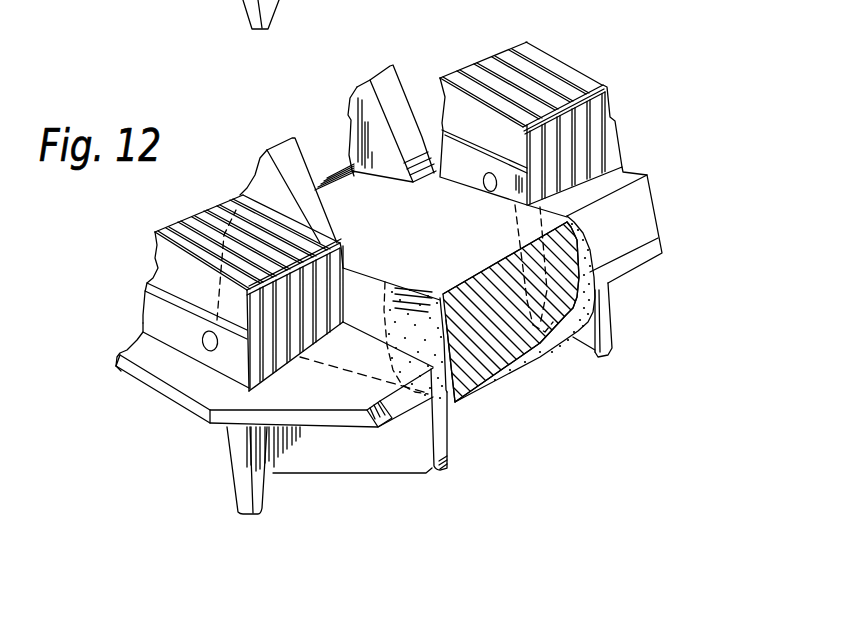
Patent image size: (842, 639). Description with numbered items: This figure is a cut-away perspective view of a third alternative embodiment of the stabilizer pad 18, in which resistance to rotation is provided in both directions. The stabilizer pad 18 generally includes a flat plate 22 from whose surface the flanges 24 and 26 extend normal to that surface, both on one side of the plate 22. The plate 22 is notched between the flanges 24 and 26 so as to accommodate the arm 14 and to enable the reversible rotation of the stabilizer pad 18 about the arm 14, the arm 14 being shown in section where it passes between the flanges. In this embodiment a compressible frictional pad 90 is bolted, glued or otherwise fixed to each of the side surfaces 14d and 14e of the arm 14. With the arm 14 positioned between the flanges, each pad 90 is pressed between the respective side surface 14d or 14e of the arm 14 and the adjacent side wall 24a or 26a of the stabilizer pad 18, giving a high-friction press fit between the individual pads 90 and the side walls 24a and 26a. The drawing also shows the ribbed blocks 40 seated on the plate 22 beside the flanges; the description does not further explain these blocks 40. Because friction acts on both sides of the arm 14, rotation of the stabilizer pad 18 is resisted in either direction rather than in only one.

The arm 14 is at (520, 360).
The side surface of the arm 14d is at (445, 407).
The side surface of the arm 14e is at (583, 300).
The stabilizer pad 18 is at (164, 406).
The flat plate 22 is at (163, 371).
The flange 24 is at (398, 0).
The side wall of the stabilizer pad 24a is at (443, 430).
The flange 26 is at (613, 330).
The side wall of the stabilizer pad 26a is at (588, 343).
The ribbed block 40 is at (148, 246).
The compressible frictional pad 90 is at (418, 281).